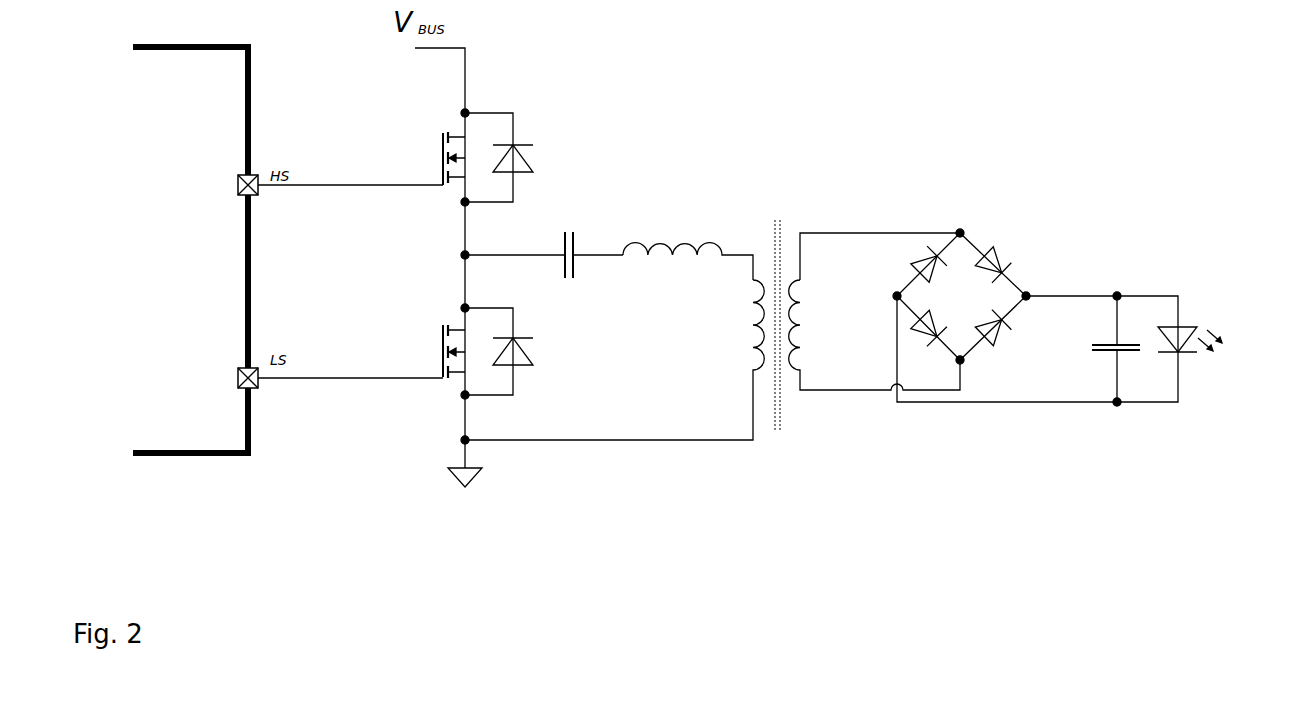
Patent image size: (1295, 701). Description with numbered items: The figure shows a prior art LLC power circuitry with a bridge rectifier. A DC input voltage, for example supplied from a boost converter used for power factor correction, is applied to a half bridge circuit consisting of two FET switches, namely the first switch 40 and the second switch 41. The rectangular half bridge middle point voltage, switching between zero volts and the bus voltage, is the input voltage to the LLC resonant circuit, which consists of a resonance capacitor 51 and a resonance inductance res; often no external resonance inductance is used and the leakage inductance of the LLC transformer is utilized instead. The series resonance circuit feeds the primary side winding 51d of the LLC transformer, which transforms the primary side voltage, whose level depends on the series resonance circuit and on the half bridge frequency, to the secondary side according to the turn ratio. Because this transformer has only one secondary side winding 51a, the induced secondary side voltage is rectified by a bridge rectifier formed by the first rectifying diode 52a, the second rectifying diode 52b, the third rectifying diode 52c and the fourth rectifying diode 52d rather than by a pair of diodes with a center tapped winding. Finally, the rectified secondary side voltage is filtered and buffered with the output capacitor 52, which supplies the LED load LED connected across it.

The switch M40 40 is at (451, 157).
The switch M41 41 is at (451, 351).
The resonance capacitor C51 51 is at (544, 240).
The resonance inductance Lres res is at (688, 242).
The primary side winding of the LLC transformer 51d is at (614, 359).
The secondary side winding L51a 51a is at (874, 311).
The rectifying diode D52a 52a is at (897, 261).
The rectifying diode D52b 52b is at (1021, 260).
The rectifying diode D52c 52c is at (926, 348).
The rectifying diode D52d 52d is at (1007, 348).
The capacitor C52 52 is at (1097, 349).
The LED load LED is at (1213, 326).